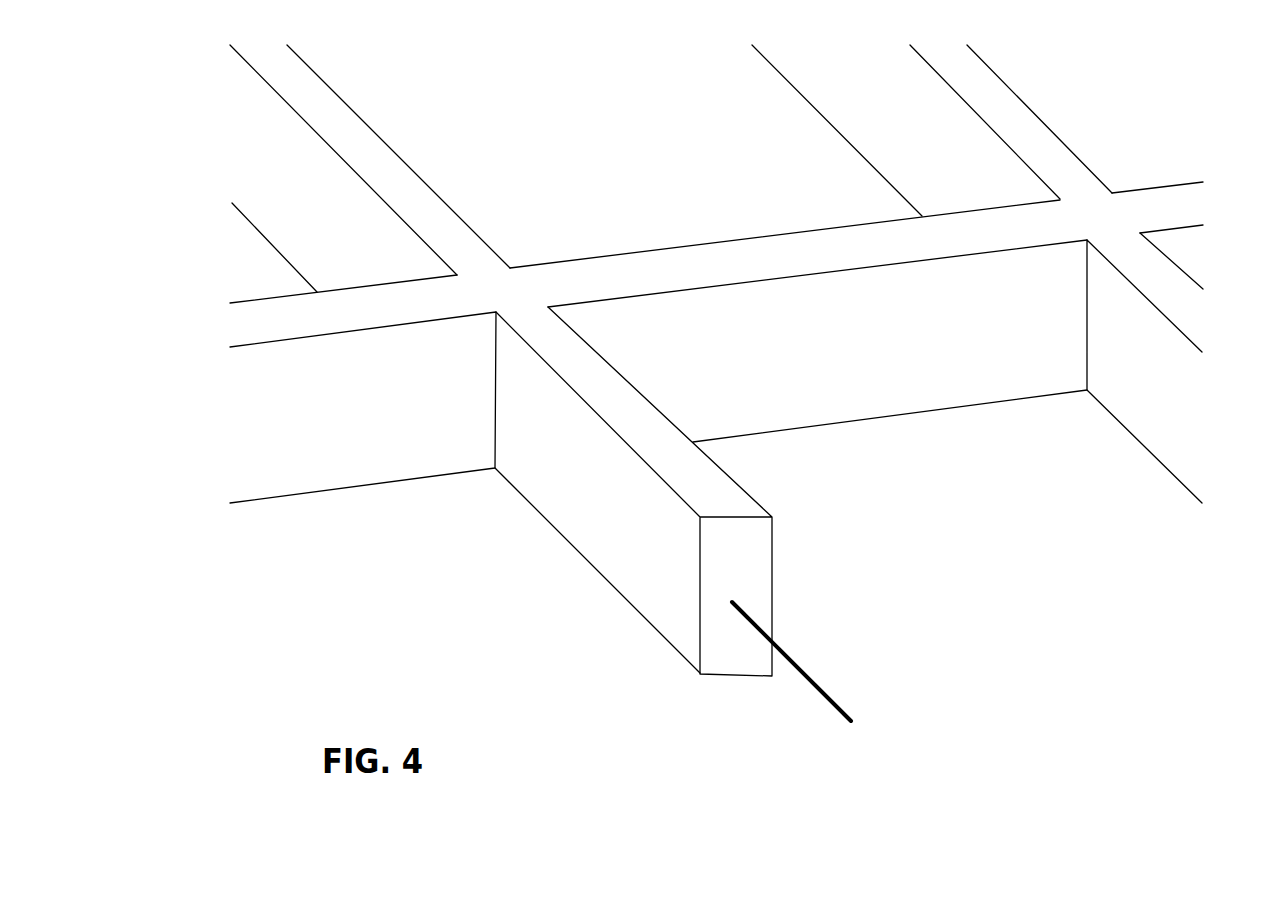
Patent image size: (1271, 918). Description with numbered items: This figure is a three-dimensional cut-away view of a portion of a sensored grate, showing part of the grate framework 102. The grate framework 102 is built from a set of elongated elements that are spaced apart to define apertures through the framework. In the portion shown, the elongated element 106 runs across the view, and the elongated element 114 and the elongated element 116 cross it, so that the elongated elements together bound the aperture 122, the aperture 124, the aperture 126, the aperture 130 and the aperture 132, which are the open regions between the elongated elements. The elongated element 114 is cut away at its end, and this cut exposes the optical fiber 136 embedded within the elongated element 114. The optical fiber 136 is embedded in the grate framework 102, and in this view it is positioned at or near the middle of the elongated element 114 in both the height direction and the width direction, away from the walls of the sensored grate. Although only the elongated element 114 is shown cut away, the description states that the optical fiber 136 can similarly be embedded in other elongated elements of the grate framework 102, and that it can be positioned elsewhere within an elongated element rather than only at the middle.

The grate framework 102 is at (467, 223).
The elongated element 106 is at (690, 245).
The elongated element 114 is at (740, 485).
The elongated element 116 is at (1002, 80).
The aperture 122 is at (247, 258).
The aperture 124 is at (619, 141).
The aperture 126 is at (1090, 115).
The aperture 130 is at (432, 530).
The aperture 132 is at (977, 458).
The optical fiber 136 is at (791, 659).